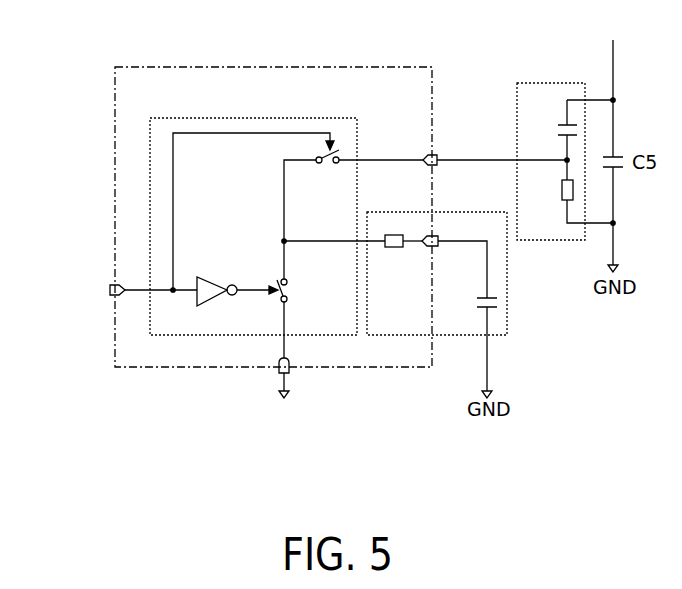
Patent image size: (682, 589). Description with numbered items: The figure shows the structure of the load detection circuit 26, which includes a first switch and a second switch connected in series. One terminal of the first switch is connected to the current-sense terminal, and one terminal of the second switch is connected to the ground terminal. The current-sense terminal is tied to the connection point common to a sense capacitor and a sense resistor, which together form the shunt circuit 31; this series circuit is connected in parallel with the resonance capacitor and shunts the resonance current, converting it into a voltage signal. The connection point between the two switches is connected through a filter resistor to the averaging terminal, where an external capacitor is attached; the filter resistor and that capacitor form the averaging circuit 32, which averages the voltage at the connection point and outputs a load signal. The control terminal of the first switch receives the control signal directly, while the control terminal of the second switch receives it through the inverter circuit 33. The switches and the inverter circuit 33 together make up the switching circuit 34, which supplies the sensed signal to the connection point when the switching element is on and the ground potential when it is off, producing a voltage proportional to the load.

The load detection circuit 26 is at (278, 67).
The shunt circuit 31 is at (548, 83).
The averaging circuit 32 is at (507, 284).
The inverter circuit 33 is at (213, 278).
The switching circuit 34 is at (357, 144).